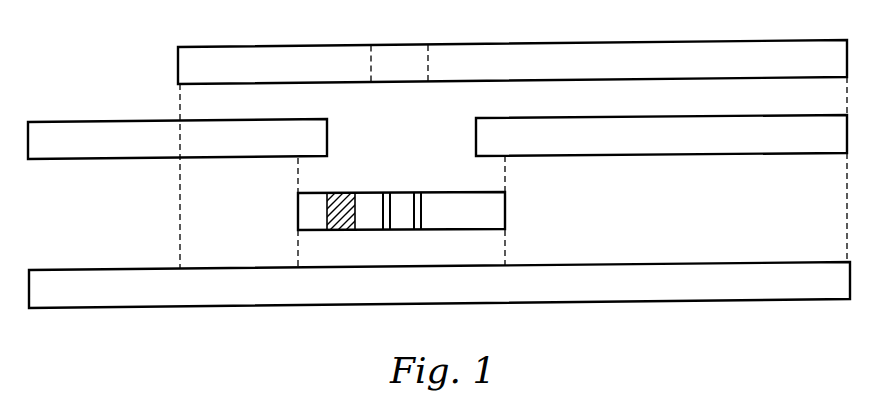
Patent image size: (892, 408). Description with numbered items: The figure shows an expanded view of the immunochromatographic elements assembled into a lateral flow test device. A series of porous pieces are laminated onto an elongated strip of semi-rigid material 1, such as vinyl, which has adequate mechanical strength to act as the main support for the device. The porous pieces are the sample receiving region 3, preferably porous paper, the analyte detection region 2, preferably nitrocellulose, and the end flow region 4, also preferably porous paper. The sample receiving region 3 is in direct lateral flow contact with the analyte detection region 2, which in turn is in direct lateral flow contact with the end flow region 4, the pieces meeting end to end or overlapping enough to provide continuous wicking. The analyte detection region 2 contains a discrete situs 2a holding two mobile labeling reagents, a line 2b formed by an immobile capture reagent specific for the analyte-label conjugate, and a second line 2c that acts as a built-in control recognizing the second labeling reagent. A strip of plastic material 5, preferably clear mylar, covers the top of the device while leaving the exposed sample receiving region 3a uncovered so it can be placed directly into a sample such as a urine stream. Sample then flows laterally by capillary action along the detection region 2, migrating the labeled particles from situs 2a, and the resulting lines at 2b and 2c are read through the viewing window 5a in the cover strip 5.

The semi-rigid material strip 1 is at (738, 266).
The analyte detection region 2 is at (425, 197).
The mobile labeling reagent situs 2a is at (349, 231).
The capture reagent line 2b is at (386, 193).
The control line 2c is at (416, 193).
The sample receiving region 3 is at (177, 165).
The exposed sample receiving region 3a is at (231, 146).
The end flow region 4 is at (678, 143).
The plastic cover strip 5 is at (512, 43).
The viewing window 5a is at (399, 63).